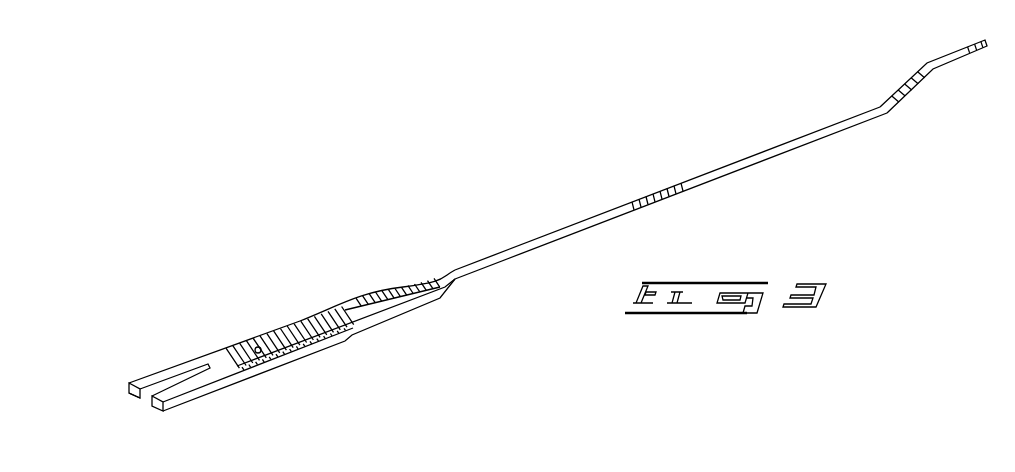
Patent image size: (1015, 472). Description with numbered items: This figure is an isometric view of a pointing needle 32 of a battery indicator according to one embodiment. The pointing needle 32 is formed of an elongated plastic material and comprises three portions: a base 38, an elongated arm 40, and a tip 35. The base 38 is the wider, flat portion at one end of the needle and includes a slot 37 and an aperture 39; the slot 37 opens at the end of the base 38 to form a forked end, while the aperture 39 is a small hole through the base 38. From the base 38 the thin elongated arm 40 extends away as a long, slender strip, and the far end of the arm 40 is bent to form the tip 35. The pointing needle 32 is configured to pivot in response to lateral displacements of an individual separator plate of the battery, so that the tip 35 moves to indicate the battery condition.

The pointing needle 32 is at (530, 178).
The tip 35 is at (945, 53).
The slot 37 is at (174, 390).
The base 38 is at (342, 303).
The aperture 39 is at (258, 346).
The elongated arm 40 is at (727, 173).